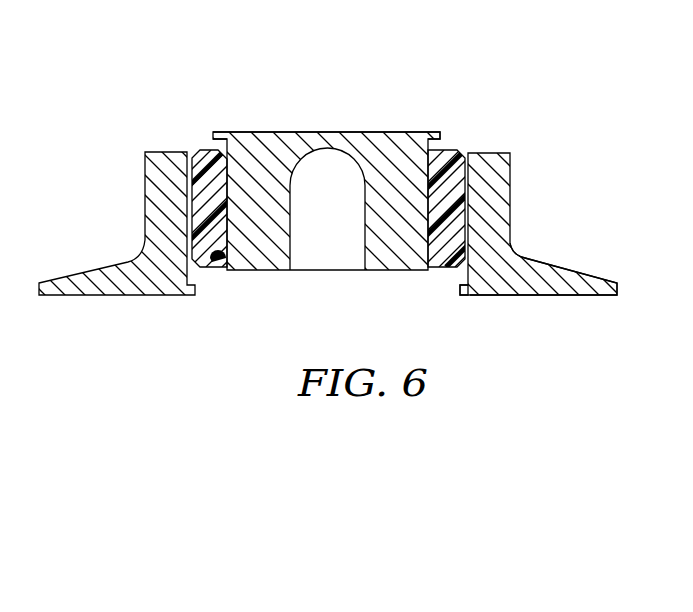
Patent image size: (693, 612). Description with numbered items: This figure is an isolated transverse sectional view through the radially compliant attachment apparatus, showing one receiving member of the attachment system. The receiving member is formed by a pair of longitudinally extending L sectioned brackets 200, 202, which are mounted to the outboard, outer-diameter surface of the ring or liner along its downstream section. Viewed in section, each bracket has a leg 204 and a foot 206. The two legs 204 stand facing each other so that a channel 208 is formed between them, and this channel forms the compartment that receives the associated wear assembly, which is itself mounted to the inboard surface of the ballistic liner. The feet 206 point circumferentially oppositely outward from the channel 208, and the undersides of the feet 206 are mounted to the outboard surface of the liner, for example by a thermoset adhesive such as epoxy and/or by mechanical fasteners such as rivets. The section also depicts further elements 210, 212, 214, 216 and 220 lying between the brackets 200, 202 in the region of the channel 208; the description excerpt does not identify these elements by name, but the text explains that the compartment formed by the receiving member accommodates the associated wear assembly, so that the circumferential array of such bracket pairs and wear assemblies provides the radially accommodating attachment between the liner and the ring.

The L sectioned bracket 200 is at (169, 207).
The L sectioned bracket 202 is at (502, 210).
The leg 204 is at (497, 200).
The foot 206 is at (546, 273).
The channel 208 is at (352, 307).
The central body 210 is at (320, 176).
The top flange 212 is at (287, 132).
The sealing ring 214 is at (216, 266).
The seal 216 is at (453, 250).
The gap 220 is at (455, 264).